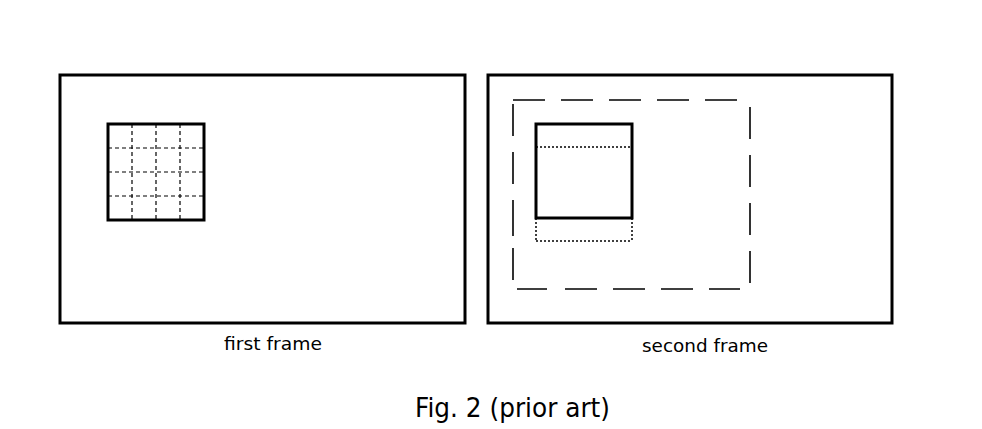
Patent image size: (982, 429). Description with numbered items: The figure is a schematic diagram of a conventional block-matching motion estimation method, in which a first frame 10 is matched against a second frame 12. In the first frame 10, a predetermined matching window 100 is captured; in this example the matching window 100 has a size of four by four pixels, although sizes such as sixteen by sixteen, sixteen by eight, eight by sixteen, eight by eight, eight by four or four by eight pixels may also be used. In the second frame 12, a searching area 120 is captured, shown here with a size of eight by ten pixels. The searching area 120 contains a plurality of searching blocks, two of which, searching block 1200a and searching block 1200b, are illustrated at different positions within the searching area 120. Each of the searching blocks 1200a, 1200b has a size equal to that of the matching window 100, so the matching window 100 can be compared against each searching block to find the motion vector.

The first frame 10 is at (324, 75).
The second frame 12 is at (760, 75).
The matching window 100 is at (204, 126).
The searching area 120 is at (750, 168).
The searching block 1200a is at (673, 124).
The searching block 1200b is at (633, 220).